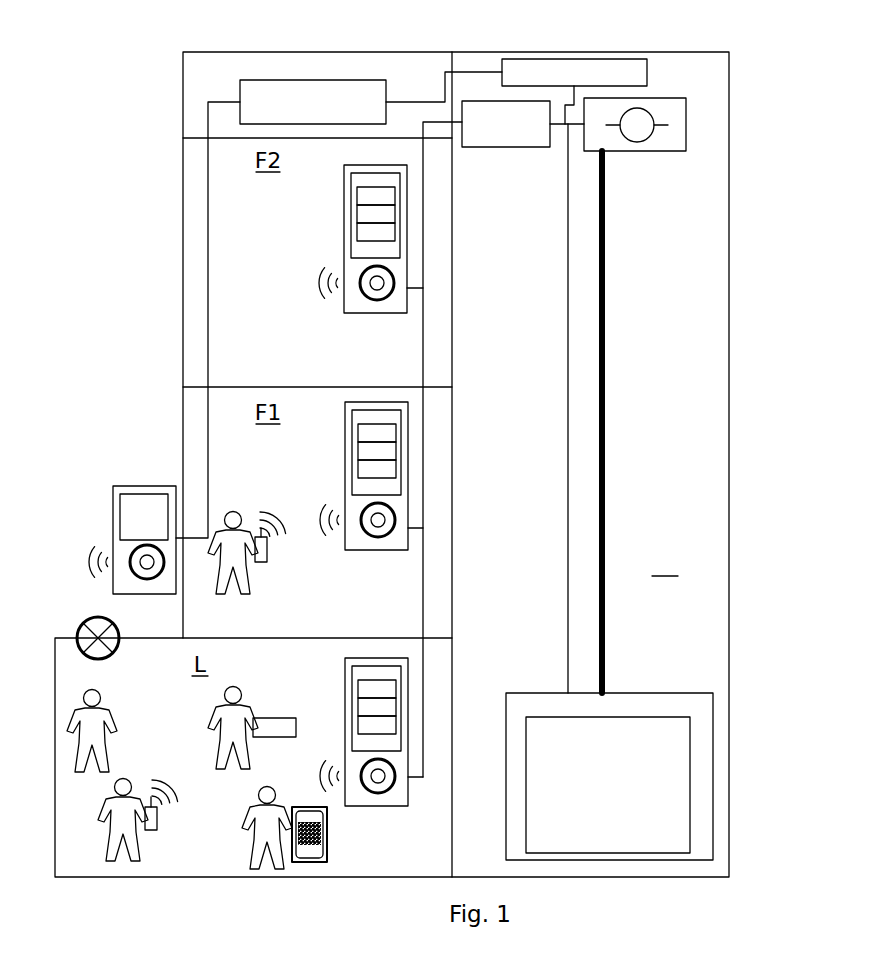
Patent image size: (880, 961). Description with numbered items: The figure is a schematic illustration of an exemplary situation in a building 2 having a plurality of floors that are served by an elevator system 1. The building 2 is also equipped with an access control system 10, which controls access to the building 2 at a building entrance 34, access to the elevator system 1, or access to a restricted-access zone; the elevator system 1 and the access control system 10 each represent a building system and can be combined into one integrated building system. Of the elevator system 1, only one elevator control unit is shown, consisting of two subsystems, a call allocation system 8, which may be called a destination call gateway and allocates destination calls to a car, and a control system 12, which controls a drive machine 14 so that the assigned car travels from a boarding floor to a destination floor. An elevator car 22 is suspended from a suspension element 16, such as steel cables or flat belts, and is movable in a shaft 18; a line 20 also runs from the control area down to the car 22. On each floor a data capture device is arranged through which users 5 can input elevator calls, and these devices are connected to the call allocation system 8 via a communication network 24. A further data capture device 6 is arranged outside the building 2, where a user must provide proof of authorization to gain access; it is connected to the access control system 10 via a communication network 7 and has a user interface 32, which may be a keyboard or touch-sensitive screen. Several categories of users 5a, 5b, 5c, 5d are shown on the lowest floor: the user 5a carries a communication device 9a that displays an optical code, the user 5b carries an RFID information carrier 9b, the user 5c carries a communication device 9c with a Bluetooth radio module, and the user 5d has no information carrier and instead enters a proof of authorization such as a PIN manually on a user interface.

The elevator system 1 is at (427, 65).
The building 2 is at (297, 52).
The users 5 is at (75, 682).
The user 5a is at (275, 800).
The user 5b is at (240, 705).
The user 5c is at (245, 528).
The user 5d is at (100, 705).
The data capture device 6 is at (123, 530).
The communication network 7 is at (209, 298).
The call allocation system 8 is at (527, 150).
The communication device 9a is at (325, 840).
The RFID information carrier 9b is at (270, 719).
The communication device 9c is at (268, 550).
The access control system 10 is at (323, 80).
The control system 12 is at (647, 62).
The drive machine 14 is at (640, 152).
The suspension element 16 is at (605, 362).
The shaft 18 is at (665, 564).
The travelling cable 20 is at (566, 390).
The elevator car 22 is at (645, 692).
The communication network 24 is at (424, 202).
The user interface 32 is at (128, 520).
The building entrance 34 is at (85, 622).